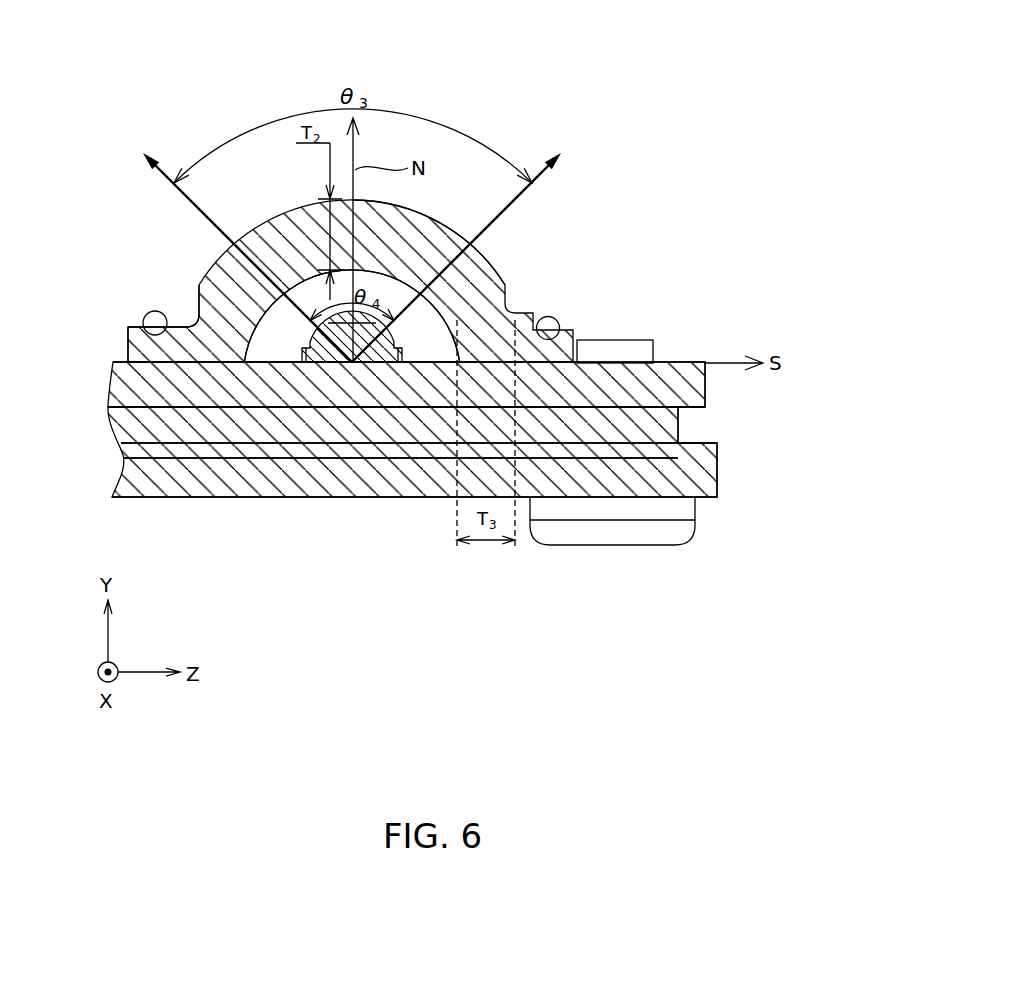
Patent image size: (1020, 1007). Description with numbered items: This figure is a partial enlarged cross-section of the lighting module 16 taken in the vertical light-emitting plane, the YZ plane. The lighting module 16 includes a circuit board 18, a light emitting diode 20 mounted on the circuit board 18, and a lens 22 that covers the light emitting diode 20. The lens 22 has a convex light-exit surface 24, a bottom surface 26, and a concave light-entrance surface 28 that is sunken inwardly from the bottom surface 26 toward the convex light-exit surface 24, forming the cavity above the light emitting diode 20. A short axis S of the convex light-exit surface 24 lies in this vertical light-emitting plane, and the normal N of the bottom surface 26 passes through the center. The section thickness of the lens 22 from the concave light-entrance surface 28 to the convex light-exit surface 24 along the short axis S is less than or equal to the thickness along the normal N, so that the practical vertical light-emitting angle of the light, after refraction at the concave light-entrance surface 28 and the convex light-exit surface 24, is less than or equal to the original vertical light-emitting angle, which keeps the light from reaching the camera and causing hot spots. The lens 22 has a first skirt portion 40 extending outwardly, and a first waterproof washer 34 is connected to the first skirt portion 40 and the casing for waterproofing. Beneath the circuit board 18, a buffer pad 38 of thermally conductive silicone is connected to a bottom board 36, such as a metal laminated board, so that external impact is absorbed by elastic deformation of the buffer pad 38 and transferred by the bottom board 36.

The lighting module 16 is at (663, 97).
The circuit board 18 is at (285, 388).
The light emitting diode 20 is at (383, 345).
The lens 22 is at (247, 228).
The convex light-exit surface 24 is at (455, 240).
The bottom surface 26 is at (206, 325).
The concave light-entrance surface 28 is at (445, 305).
The first waterproof washer 34 is at (152, 312).
The bottom board 36 is at (662, 473).
The buffer pad 38 is at (583, 437).
The first skirt portion 40 is at (157, 345).